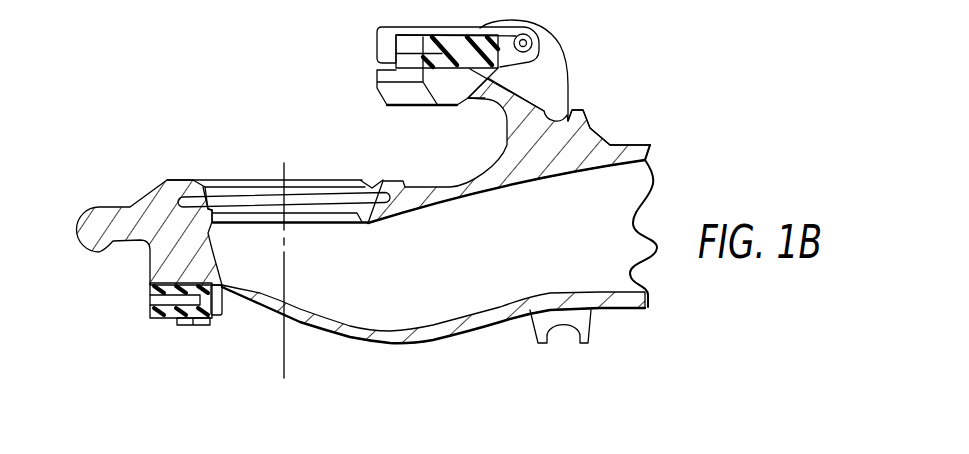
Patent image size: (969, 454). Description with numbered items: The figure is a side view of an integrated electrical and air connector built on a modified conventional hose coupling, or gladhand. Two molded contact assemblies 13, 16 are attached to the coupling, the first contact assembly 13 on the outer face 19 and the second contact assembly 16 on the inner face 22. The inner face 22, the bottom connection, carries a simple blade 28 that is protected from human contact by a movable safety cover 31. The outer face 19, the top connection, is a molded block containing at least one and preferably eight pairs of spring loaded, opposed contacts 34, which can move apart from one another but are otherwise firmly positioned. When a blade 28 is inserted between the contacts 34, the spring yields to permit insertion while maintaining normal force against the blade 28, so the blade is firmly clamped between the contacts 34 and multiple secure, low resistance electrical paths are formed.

The molded contact assembly 13 is at (570, 57).
The molded contact assembly 16 is at (224, 317).
The outer face 19 is at (353, 345).
The inner face 22 is at (593, 127).
The blade 28 is at (377, 85).
The movable safety cover 31 is at (380, 30).
The contact 34 is at (168, 322).